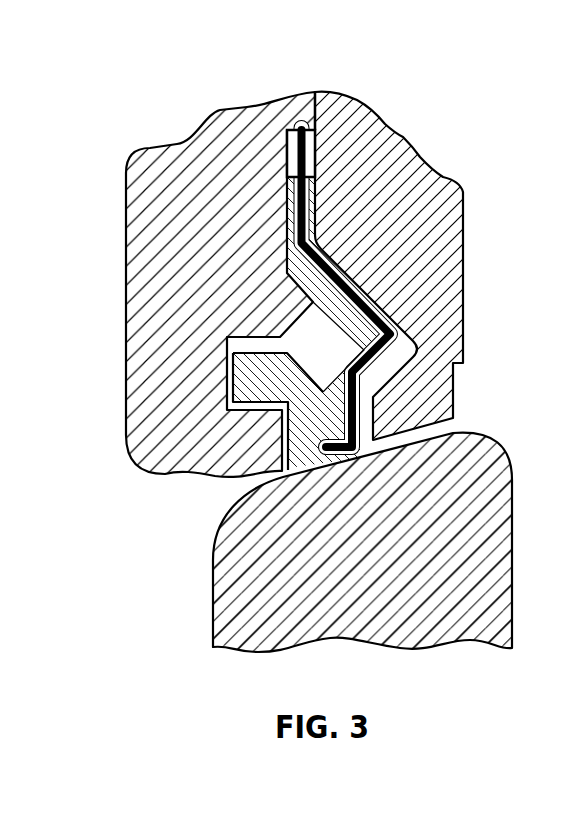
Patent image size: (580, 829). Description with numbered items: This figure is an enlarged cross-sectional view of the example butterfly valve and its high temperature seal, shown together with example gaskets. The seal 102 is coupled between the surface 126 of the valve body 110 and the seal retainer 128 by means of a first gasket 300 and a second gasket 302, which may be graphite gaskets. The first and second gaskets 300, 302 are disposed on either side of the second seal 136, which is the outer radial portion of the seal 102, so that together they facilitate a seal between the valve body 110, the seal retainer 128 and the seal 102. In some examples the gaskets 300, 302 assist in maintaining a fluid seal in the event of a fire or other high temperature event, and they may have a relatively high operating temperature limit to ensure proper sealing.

The first gasket 300 is at (305, 150).
The second gasket 302 is at (320, 165).
The surface 126 is at (313, 150).
The valve body 110 is at (393, 224).
The seal retainer 128 is at (162, 262).
The second seal 136 is at (365, 300).
The seal 102 is at (325, 345).